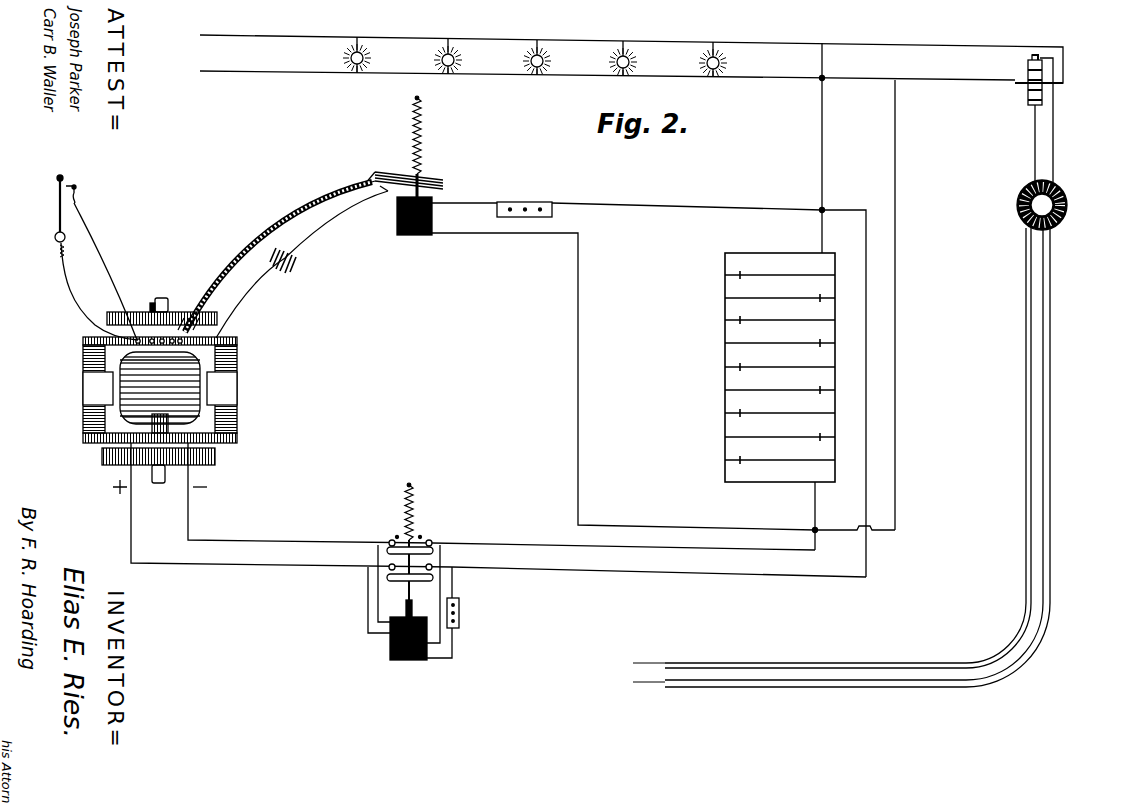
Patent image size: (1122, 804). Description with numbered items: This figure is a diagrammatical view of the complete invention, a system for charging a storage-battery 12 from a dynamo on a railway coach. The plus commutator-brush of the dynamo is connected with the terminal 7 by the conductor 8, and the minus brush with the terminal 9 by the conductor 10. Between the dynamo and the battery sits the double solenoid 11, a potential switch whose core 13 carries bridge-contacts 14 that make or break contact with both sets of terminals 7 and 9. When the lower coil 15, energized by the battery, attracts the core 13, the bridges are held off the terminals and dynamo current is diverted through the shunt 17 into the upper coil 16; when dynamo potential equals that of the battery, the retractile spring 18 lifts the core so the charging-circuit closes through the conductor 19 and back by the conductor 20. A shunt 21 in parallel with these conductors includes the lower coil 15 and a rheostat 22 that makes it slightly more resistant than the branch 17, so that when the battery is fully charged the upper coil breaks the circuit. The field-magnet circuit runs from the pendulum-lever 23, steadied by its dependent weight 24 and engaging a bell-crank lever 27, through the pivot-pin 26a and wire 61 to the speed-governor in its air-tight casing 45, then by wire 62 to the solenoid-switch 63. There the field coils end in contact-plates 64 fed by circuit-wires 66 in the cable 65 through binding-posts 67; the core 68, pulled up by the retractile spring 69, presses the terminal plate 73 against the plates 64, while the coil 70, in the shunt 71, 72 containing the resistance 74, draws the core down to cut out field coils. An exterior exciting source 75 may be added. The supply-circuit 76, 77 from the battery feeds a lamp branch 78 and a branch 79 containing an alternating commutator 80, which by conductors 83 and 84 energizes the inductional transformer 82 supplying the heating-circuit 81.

The lamp branch 78 is at (535, 57).
The alternating-commutator branch 79 is at (631, 59).
The alternating commutator 80 is at (1030, 88).
The conductor 84 is at (1058, 120).
The conductor 83 is at (1034, 150).
The inductional transformer 82 is at (1057, 205).
The heating-circuit 81 is at (854, 457).
The supply-circuit conductor 77 is at (837, 148).
The supply-circuit conductor 76 is at (893, 390).
The shunt-circuit conductor 72 is at (622, 205).
The resistance 74 is at (516, 205).
The shunt-circuit conductor 71 is at (575, 303).
The storage-battery 12 is at (708, 380).
The conductor 20 is at (537, 550).
The conductor 19 is at (645, 578).
The conductor 10 is at (306, 545).
The conductor 8 is at (306, 573).
The solenoid-switch 63 is at (430, 169).
The retractile spring 69 is at (403, 135).
The contact-plates 64 is at (378, 170).
The core 68 is at (406, 185).
The coil 70 is at (394, 232).
The terminal plate 73 is at (389, 192).
The cable 65 is at (276, 216).
The wire 62 is at (278, 285).
The exterior exciting source 75 is at (298, 262).
The separable air-tight casing 45 is at (160, 390).
The circuit-wires 66 is at (186, 308).
The binding-posts 67 is at (144, 301).
The pivot-pin 26a is at (45, 172).
The pendulum-lever 23 is at (46, 205).
The dependent weight 24 is at (47, 241).
The wire 61 is at (91, 291).
The bell-crank lever 27 is at (101, 260).
The double solenoid 11 is at (411, 583).
The retractile spring 18 is at (390, 506).
The core 13 is at (412, 608).
The bridge-contacts 14 is at (422, 543).
The terminal 9 is at (391, 540).
The terminal 7 is at (433, 566).
The shunt 17 is at (365, 588).
The upper coil 16 is at (362, 630).
The shunt 21 is at (452, 658).
The rheostat 22 is at (468, 613).
The lower coil 15 is at (413, 661).